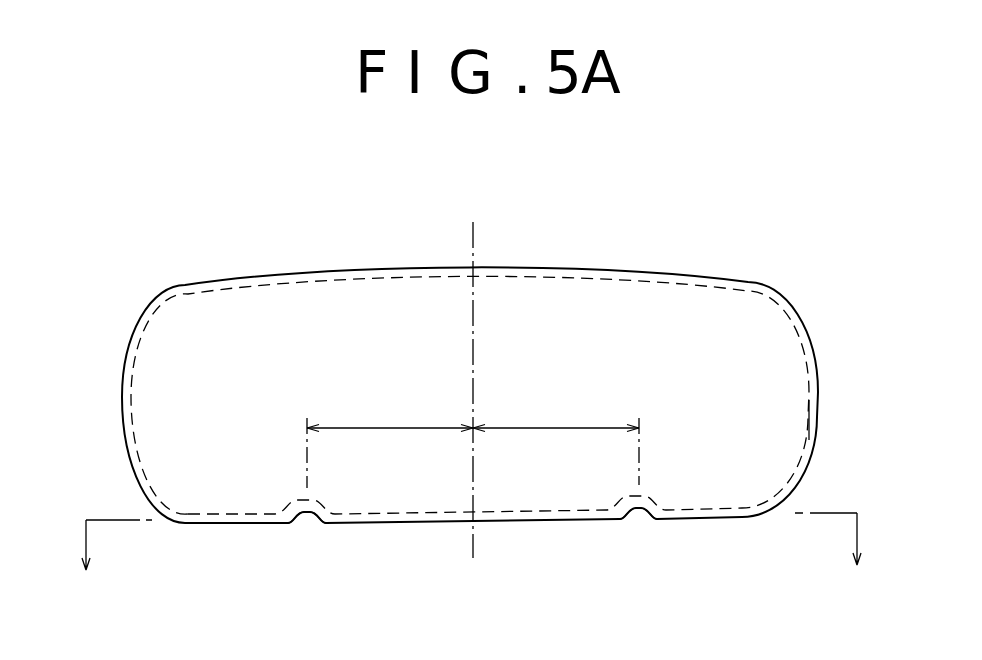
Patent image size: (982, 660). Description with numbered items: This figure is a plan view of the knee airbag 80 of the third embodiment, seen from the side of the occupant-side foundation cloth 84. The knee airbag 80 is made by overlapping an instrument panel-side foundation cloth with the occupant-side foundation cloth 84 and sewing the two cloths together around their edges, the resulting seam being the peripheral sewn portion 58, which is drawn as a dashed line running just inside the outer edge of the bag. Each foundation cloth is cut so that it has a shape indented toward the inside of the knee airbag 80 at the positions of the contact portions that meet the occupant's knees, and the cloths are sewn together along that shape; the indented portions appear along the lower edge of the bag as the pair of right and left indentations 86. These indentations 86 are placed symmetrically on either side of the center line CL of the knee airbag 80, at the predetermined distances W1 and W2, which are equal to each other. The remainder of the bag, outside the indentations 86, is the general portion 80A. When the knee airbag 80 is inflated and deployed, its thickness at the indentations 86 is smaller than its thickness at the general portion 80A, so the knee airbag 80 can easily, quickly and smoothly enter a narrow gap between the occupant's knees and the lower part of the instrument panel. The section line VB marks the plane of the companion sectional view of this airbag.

The knee airbag 80 is at (791, 288).
The general portion 80A is at (153, 411).
The peripheral sewn portion 58 is at (808, 420).
The occupant-side foundation cloth 84 is at (255, 487).
The indentations 86 is at (312, 517).
The center line CL is at (475, 232).
The predetermined distance W1 is at (373, 429).
The predetermined distance W2 is at (578, 429).
The section line VB is at (477, 559).